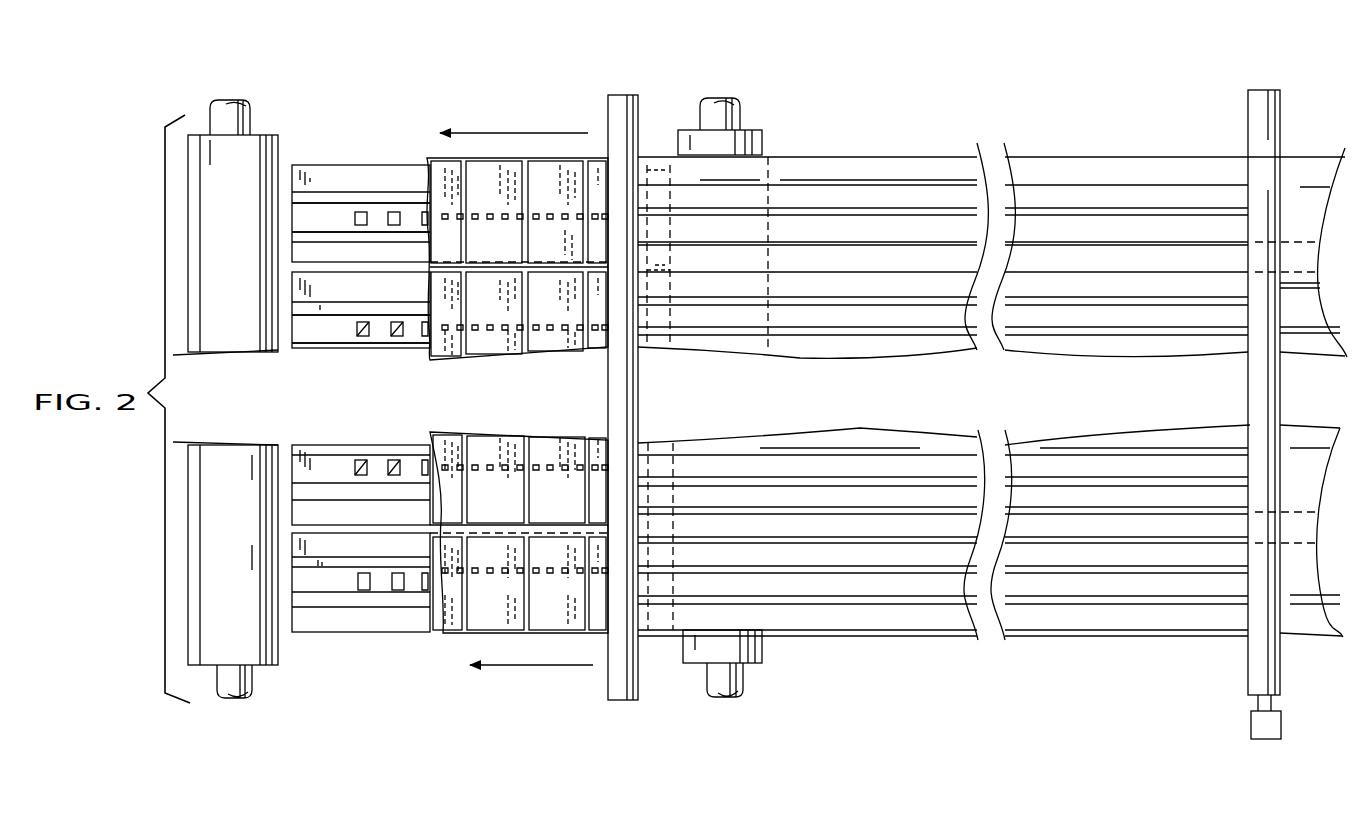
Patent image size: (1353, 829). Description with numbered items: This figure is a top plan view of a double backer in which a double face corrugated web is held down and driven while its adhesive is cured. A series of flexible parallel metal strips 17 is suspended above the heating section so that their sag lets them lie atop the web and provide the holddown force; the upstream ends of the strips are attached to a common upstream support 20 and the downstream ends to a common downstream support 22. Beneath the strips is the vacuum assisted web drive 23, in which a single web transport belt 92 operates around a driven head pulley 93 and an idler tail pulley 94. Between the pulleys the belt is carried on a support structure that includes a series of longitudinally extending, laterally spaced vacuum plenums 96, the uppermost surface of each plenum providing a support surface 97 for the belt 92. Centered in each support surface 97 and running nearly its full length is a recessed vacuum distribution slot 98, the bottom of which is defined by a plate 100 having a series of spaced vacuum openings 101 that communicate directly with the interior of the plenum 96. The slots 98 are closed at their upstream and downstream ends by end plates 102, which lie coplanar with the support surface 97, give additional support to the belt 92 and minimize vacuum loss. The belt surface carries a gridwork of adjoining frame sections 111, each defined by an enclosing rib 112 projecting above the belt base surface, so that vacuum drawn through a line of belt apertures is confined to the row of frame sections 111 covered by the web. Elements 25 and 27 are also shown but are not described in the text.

The flexible parallel metal strips 17 is at (992, 366).
The common upstream support 20 is at (1229, 430).
The common downstream support 22 is at (625, 97).
The vacuum assisted web drive 23 is at (269, 276).
The rail top flange 25 is at (810, 197).
The foot 27 is at (1258, 727).
The web transport belt 92 is at (526, 395).
The driven head pulley 93 is at (268, 135).
The idler tail pulley 94 is at (693, 655).
The vacuum plenums 96 is at (273, 587).
The support surface 97 is at (400, 603).
The recessed vacuum distribution slot 98 is at (413, 583).
The plate 100 is at (340, 217).
The vacuum openings 101 is at (395, 463).
The end plates 102 is at (300, 215).
The frame sections 111 is at (528, 190).
The enclosing rib 112 is at (588, 307).